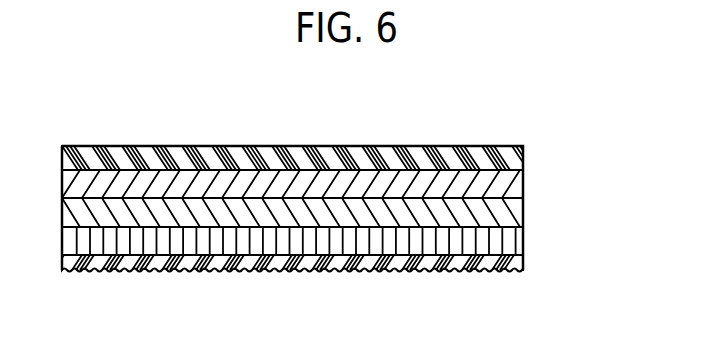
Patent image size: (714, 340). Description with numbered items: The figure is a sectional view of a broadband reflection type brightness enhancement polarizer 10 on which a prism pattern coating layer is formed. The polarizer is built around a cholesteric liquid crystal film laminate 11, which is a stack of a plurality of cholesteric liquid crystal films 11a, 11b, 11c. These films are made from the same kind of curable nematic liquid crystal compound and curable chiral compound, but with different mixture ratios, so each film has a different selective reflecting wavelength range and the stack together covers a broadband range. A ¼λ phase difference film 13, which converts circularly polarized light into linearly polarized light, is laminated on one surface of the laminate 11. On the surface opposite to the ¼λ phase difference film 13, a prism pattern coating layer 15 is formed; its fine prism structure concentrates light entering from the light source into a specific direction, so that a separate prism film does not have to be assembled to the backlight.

The broadband reflection type brightness enhancement polarizer 10 is at (535, 128).
The cholesteric liquid crystal film laminate 11 is at (343, 212).
The cholesteric liquid crystal film 11a is at (523, 183).
The cholesteric liquid crystal film 11b is at (517, 212).
The cholesteric liquid crystal film 11c is at (510, 240).
The ¼λ phase difference film 13 is at (523, 159).
The prism pattern coating layer 15 is at (523, 263).